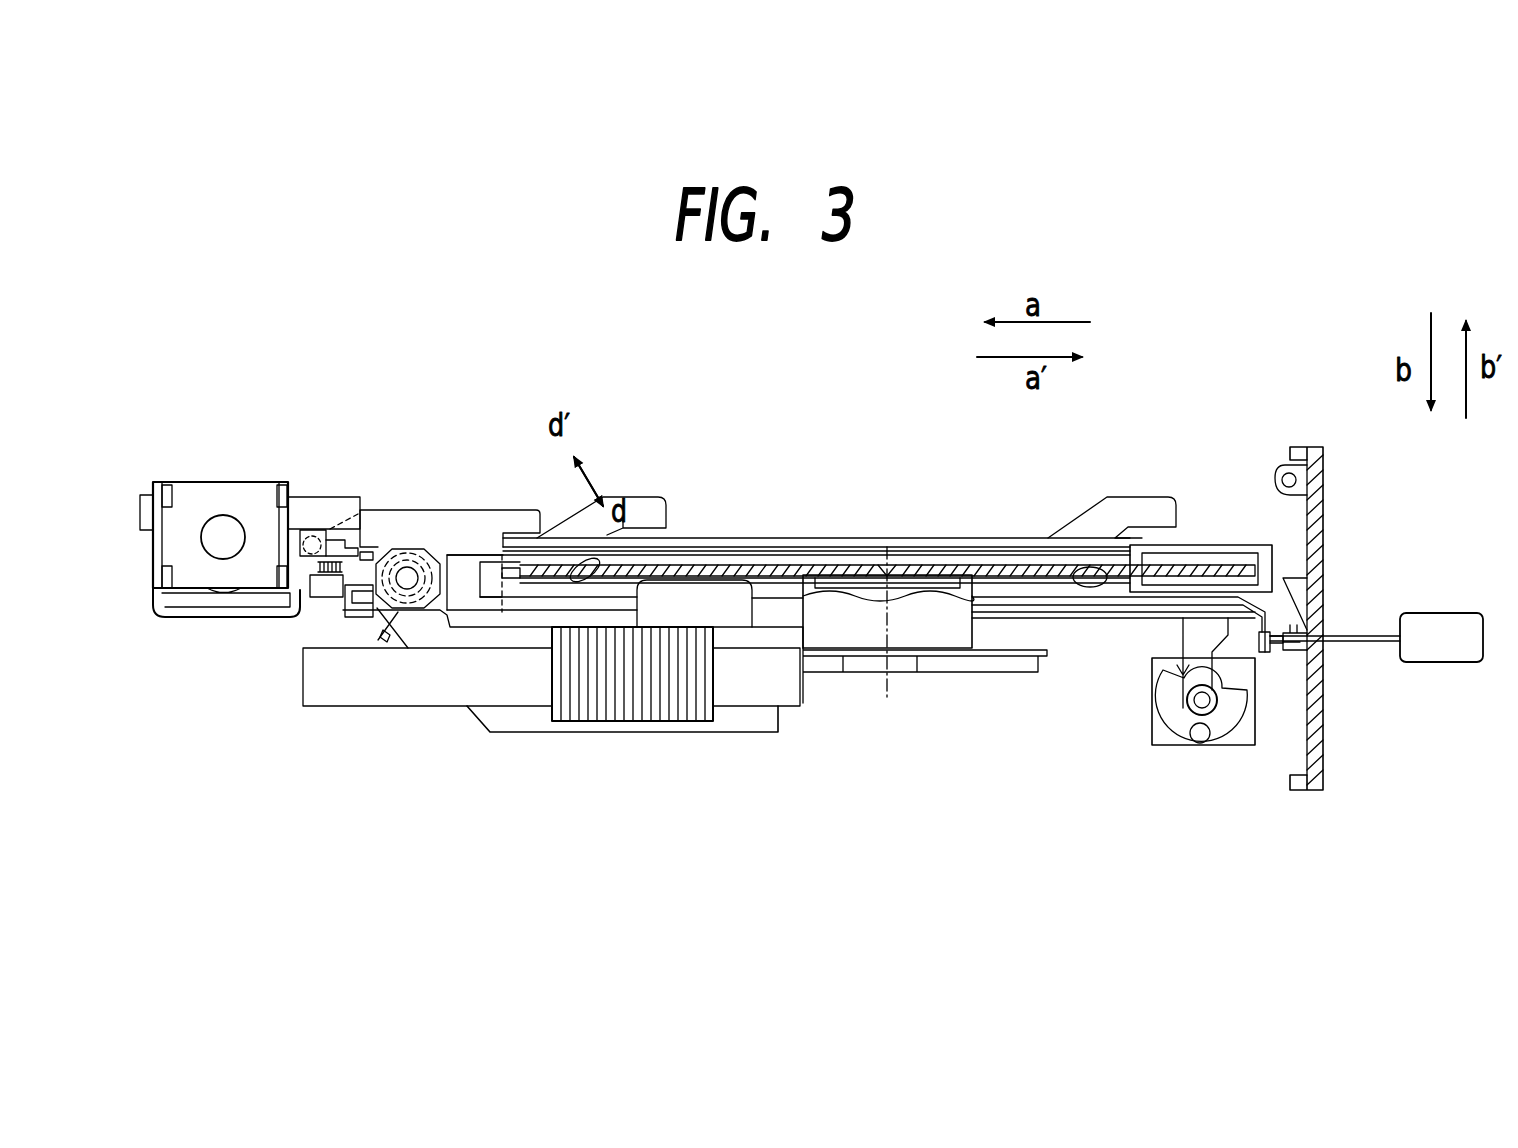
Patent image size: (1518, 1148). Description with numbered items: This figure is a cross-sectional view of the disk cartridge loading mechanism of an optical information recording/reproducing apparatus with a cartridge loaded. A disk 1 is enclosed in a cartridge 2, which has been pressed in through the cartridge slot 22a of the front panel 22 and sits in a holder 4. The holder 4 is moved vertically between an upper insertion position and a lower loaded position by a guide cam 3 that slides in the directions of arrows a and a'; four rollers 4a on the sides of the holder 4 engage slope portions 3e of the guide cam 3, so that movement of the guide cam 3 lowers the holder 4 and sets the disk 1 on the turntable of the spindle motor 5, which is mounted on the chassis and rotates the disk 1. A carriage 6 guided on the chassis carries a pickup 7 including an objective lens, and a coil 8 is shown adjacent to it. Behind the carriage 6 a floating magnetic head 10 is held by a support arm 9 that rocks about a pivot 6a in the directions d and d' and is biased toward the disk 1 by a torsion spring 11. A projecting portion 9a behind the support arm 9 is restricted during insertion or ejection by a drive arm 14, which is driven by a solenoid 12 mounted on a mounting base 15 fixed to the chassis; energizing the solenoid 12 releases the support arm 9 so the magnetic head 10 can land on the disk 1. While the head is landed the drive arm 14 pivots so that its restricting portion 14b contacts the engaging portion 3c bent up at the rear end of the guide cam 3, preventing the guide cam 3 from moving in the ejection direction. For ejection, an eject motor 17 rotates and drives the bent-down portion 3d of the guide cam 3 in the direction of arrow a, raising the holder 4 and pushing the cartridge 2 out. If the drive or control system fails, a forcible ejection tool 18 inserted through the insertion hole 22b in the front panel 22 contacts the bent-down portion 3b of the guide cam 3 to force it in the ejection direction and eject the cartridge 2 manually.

The disk 1 is at (1200, 563).
The cartridge 2 is at (1250, 562).
The guide cam 3 is at (1110, 620).
The bent-down portion 3b is at (1268, 655).
The engaging portion 3c is at (355, 620).
The bent-down portion 3d is at (1187, 628).
The slope portions 3e is at (640, 500).
The holder 4 is at (988, 538).
The rollers 4a is at (583, 560).
The spindle motor 5 is at (920, 672).
The carriage 6 is at (770, 730).
The pivot 6a is at (410, 580).
The pickup 7 is at (735, 592).
The coil spring 8 is at (668, 712).
The support arm 9 is at (405, 515).
The projecting portion 9a is at (305, 538).
The floating magnetic head 10 is at (690, 546).
The torsion spring 11 is at (380, 628).
The solenoid 12 is at (207, 510).
The drive arm 14 is at (330, 498).
The restricting portion 14b is at (315, 605).
The mounting base 15 is at (152, 618).
The eject motor 17 is at (1172, 746).
The forcible ejection tool 18 is at (1370, 634).
The front panel 22 is at (1325, 755).
The cartridge slot 22a is at (1325, 533).
The insertion hole 22b is at (1325, 655).